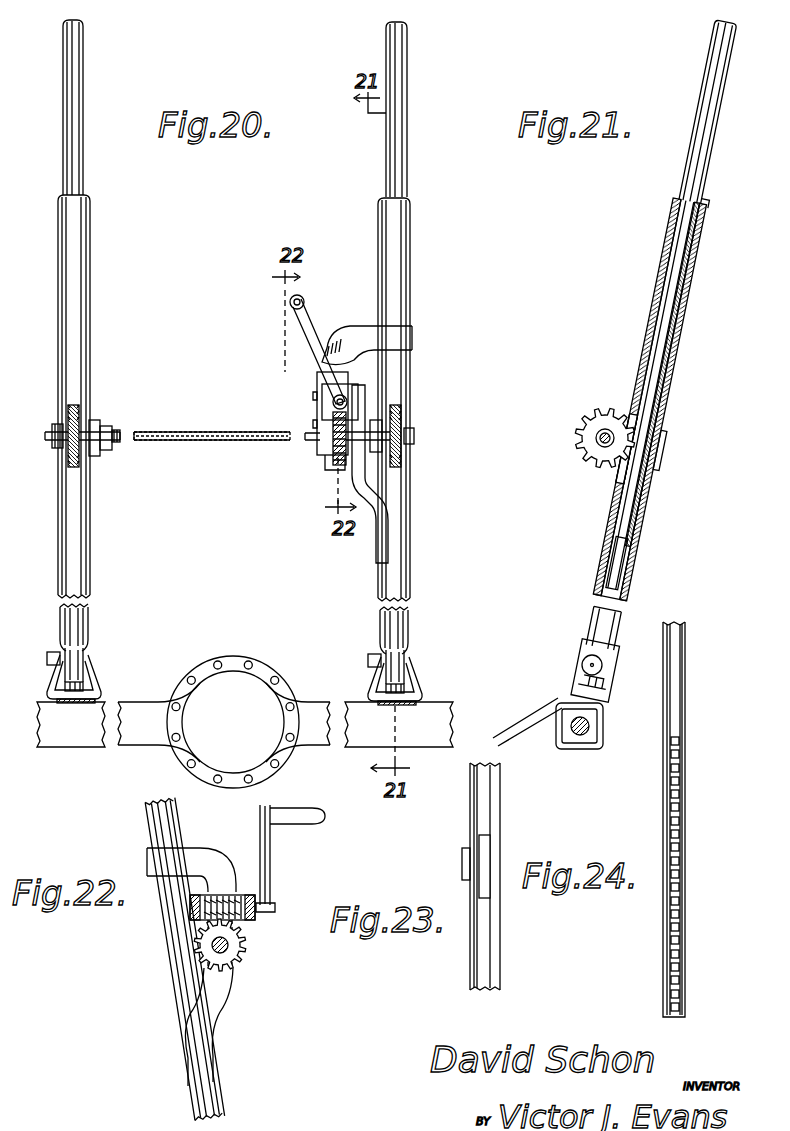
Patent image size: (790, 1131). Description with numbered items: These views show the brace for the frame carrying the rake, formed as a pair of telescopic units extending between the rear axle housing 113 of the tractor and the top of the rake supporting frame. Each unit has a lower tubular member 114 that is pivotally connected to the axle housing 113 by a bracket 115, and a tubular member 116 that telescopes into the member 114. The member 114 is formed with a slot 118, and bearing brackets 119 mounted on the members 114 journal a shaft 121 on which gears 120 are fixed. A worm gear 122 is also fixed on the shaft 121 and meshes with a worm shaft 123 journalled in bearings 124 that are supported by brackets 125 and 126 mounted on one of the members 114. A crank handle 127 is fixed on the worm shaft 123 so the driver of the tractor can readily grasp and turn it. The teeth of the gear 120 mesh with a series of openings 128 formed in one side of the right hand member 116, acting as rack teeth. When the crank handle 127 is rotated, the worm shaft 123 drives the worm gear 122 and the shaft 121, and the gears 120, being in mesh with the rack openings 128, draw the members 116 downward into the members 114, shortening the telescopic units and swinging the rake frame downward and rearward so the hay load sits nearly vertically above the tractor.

In FIG. 20, the rear axle housing 113 is at (425, 716).
In FIG. 21, the rear axle housing 113 is at (598, 749).
In FIG. 20, the lower tubular member 114 is at (78, 302).
In FIG. 21, the lower tubular member 114 is at (696, 242).
In FIG. 22, the lower tubular member 114 is at (235, 1090).
In FIG. 23, the lower tubular member 114 is at (494, 803).
In FIG. 20, the bracket 115 is at (96, 672).
In FIG. 21, the bracket 115 is at (578, 670).
In FIG. 20, the tubular member 116 is at (78, 79).
In FIG. 21, the tubular member 116 is at (700, 142).
In FIG. 24, the tubular member 116 is at (686, 668).
In FIG. 21, the slot 118 is at (597, 497).
In FIG. 23, the slot 118 is at (483, 850).
In FIG. 20, the bearing brackets 119 is at (92, 421).
In FIG. 21, the bearing brackets 119 is at (648, 446).
In FIG. 20, the gears 120 is at (84, 395).
In FIG. 21, the gears 120 is at (598, 420).
In FIG. 20, the shaft 121 is at (224, 421).
In FIG. 21, the shaft 121 is at (597, 452).
In FIG. 22, the shaft 121 is at (232, 948).
In FIG. 20, the worm gear 122 is at (335, 460).
In FIG. 22, the worm gear 122 is at (238, 957).
In FIG. 20, the worm shaft 123 is at (333, 397).
In FIG. 22, the worm shaft 123 is at (255, 906).
In FIG. 20, the bearings 124 is at (348, 388).
In FIG. 22, the bearings 124 is at (252, 890).
In FIG. 20, the bracket 125 is at (366, 342).
In FIG. 22, the bracket 125 is at (205, 852).
In FIG. 20, the bracket 126 is at (362, 474).
In FIG. 22, the bracket 126 is at (226, 1000).
In FIG. 20, the crank handle 127 is at (312, 324).
In FIG. 22, the crank handle 127 is at (272, 838).
In FIG. 21, the openings 128 is at (678, 330).
In FIG. 24, the openings 128 is at (681, 756).